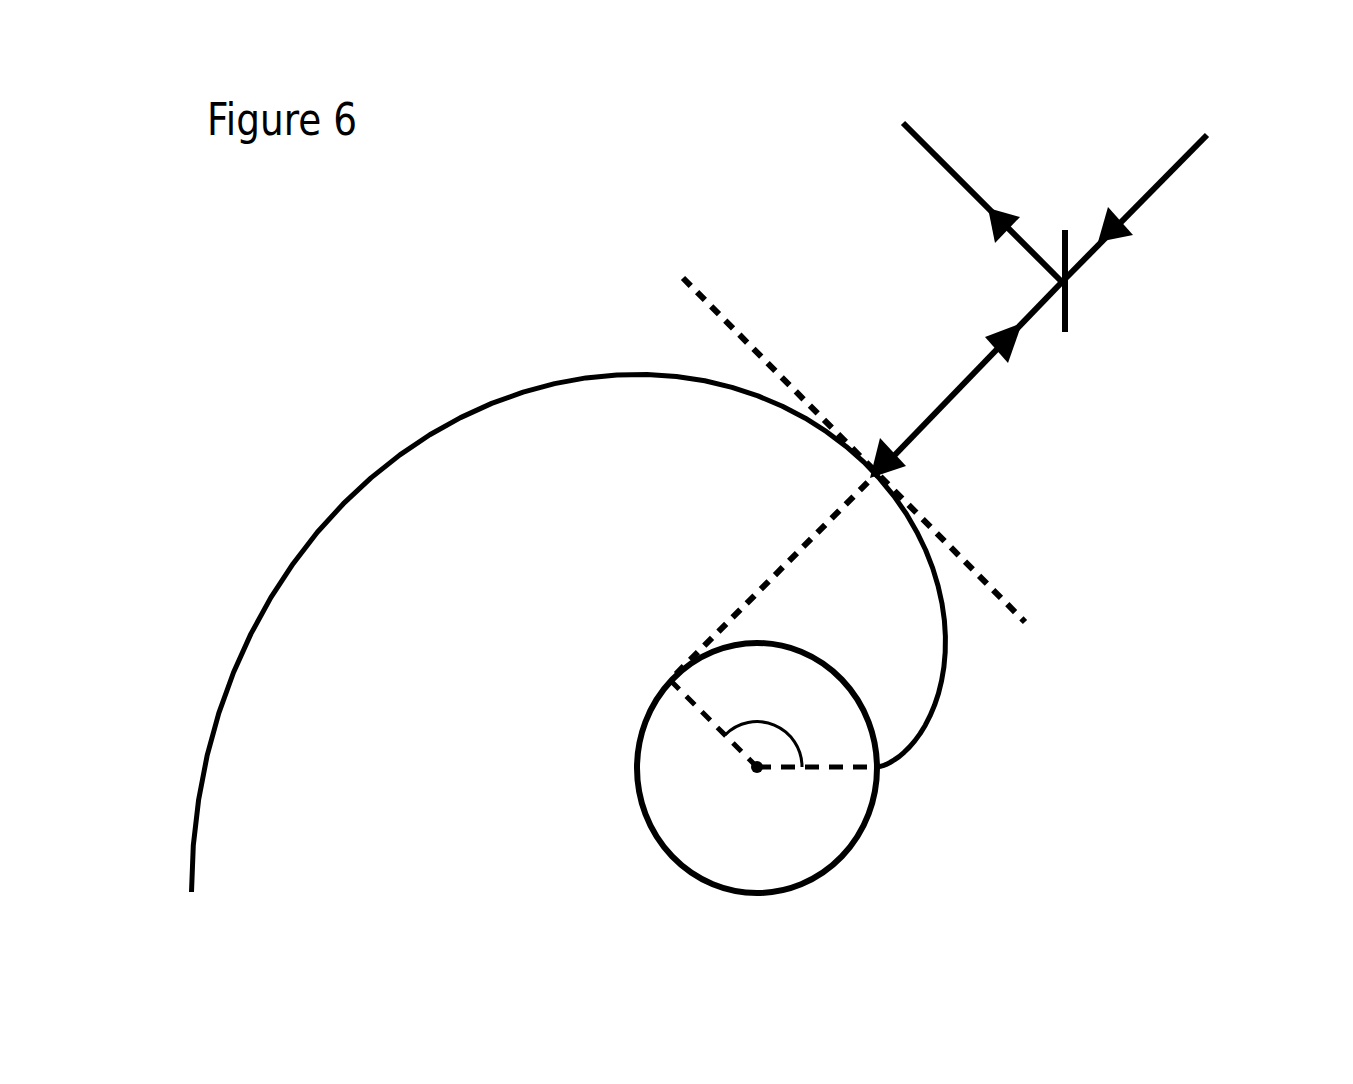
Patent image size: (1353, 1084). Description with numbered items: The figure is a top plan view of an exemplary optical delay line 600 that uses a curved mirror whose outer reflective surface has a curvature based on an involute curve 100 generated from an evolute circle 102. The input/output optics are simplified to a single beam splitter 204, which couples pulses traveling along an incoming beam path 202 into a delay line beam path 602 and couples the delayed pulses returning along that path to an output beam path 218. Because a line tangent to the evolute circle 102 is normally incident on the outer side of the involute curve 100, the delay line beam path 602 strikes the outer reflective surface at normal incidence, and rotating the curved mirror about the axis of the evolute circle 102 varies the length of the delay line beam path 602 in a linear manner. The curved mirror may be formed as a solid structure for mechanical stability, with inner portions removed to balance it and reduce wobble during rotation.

The optical delay line 600 is at (604, 161).
The involute curve 100 is at (296, 562).
The evolute circle 102 is at (636, 797).
The incoming beam path 202 is at (1167, 168).
The beam splitter 204 is at (1070, 313).
The output beam path 218 is at (925, 152).
The delay line beam path 602 is at (942, 410).